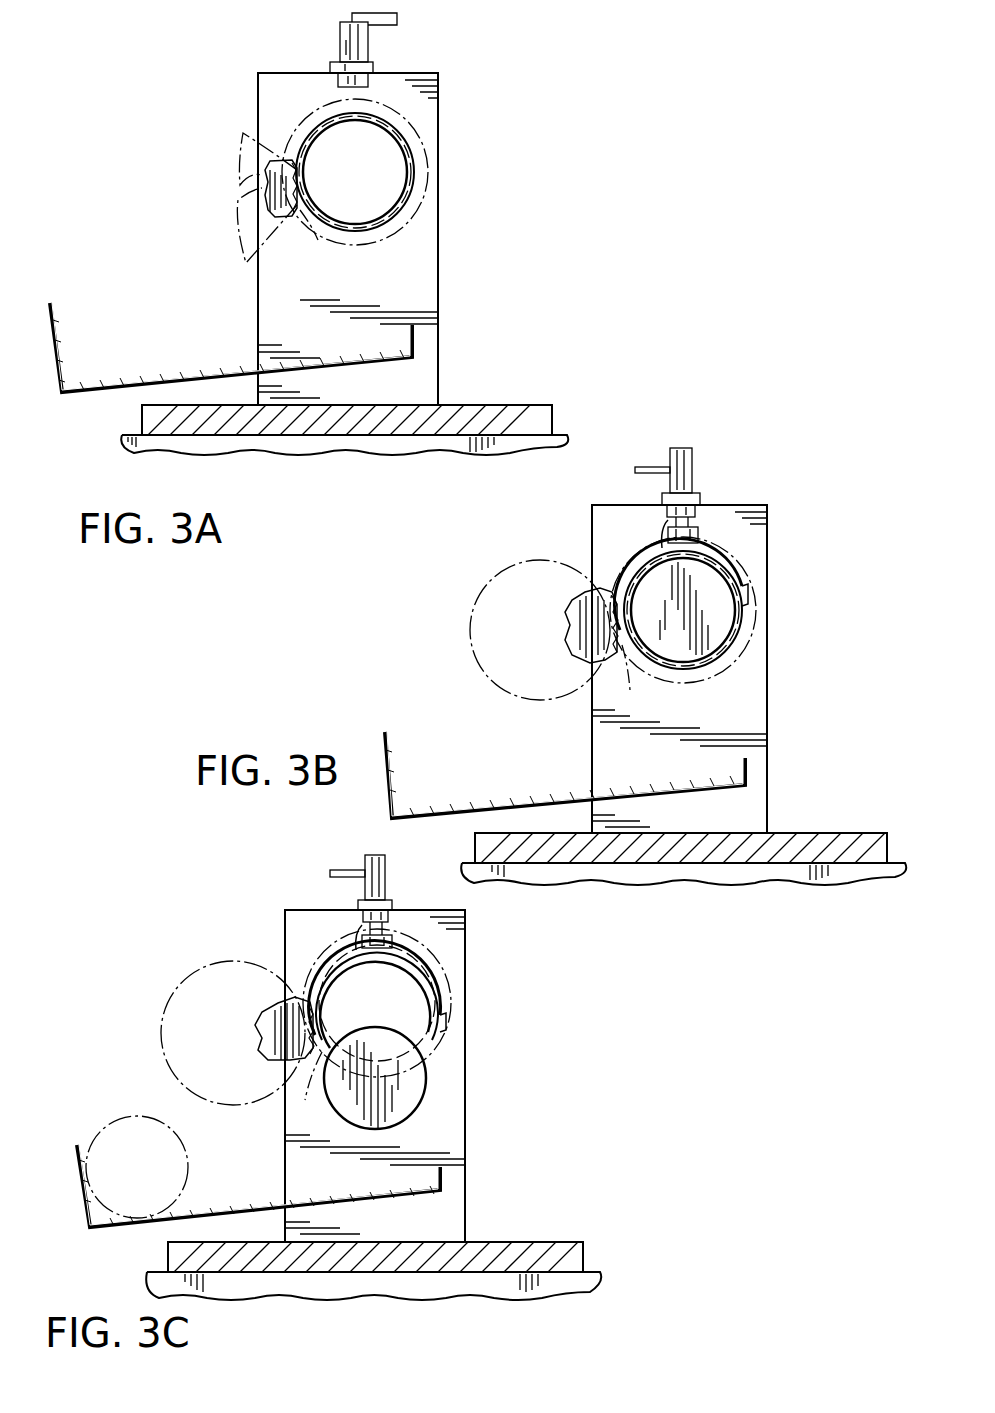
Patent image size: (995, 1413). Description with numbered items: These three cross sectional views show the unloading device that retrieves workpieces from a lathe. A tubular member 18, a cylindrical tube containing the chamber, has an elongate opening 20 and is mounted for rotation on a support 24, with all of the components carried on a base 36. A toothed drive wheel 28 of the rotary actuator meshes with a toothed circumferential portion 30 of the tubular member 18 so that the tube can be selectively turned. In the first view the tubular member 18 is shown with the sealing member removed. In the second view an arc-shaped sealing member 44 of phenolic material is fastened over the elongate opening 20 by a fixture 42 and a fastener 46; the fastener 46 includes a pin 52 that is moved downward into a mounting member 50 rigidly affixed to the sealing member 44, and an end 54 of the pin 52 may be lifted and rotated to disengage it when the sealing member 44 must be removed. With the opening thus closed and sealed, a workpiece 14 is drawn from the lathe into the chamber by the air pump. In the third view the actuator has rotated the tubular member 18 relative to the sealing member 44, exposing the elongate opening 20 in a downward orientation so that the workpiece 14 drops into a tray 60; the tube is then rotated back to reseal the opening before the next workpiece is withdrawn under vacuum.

In FIG. 3B, the workpiece 14 is at (722, 622).
In FIG. 3C, the workpiece 14 is at (405, 1122).
In FIG. 3A, the tubular member 18 is at (385, 230).
In FIG. 3B, the tubular member 18 is at (706, 668).
In FIG. 3C, the tubular member 18 is at (440, 1035).
In FIG. 3A, the elongate opening 20 is at (405, 150).
In FIG. 3B, the elongate opening 20 is at (630, 580).
In FIG. 3C, the elongate opening 20 is at (332, 1045).
In FIG. 3A, the support 24 is at (438, 297).
In FIG. 3B, the support 24 is at (767, 714).
In FIG. 3C, the support 24 is at (465, 1138).
In FIG. 3A, the toothed drive wheel 28 is at (262, 172).
In FIG. 3B, the toothed drive wheel 28 is at (583, 595).
In FIG. 3C, the toothed drive wheel 28 is at (272, 1000).
In FIG. 3A, the toothed circumferential portion 30 is at (306, 222).
In FIG. 3B, the toothed circumferential portion 30 is at (622, 648).
In FIG. 3C, the toothed circumferential portion 30 is at (318, 1058).
In FIG. 3A, the base 36 is at (505, 405).
In FIG. 3B, the base 36 is at (828, 833).
In FIG. 3C, the base 36 is at (545, 1242).
In FIG. 3A, the fixture 42 is at (373, 65).
In FIG. 3B, the fixture 42 is at (700, 498).
In FIG. 3C, the fixture 42 is at (393, 905).
In FIG. 3B, the sealing member 44 is at (740, 572).
In FIG. 3C, the sealing member 44 is at (440, 985).
In FIG. 3A, the fastener 46 is at (338, 40).
In FIG. 3B, the fastener 46 is at (694, 458).
In FIG. 3C, the fastener 46 is at (362, 862).
In FIG. 3B, the mounting member 50 is at (665, 535).
In FIG. 3C, the mounting member 50 is at (358, 942).
In FIG. 3B, the pin 52 is at (700, 530).
In FIG. 3C, the pin 52 is at (395, 940).
In FIG. 3A, the end of pin 54 is at (397, 25).
In FIG. 3B, the end of pin 54 is at (650, 466).
In FIG. 3C, the end of pin 54 is at (340, 877).
In FIG. 3A, the tray 60 is at (168, 374).
In FIG. 3B, the tray 60 is at (552, 790).
In FIG. 3C, the tray 60 is at (138, 1228).